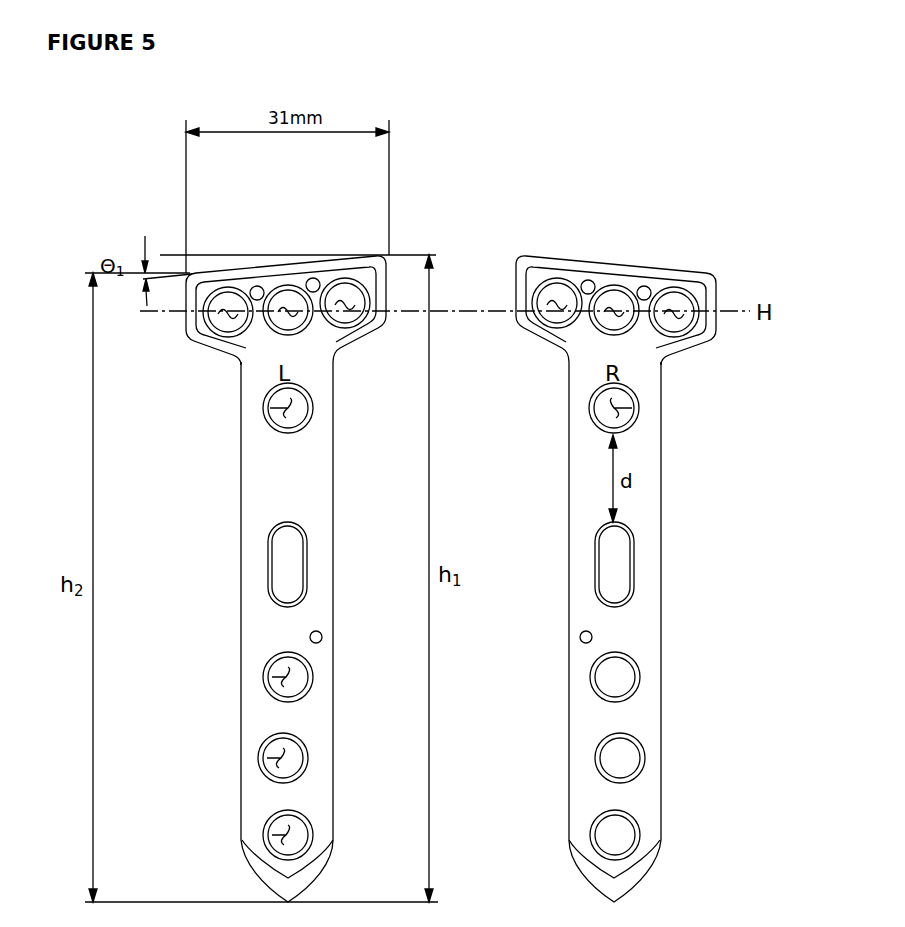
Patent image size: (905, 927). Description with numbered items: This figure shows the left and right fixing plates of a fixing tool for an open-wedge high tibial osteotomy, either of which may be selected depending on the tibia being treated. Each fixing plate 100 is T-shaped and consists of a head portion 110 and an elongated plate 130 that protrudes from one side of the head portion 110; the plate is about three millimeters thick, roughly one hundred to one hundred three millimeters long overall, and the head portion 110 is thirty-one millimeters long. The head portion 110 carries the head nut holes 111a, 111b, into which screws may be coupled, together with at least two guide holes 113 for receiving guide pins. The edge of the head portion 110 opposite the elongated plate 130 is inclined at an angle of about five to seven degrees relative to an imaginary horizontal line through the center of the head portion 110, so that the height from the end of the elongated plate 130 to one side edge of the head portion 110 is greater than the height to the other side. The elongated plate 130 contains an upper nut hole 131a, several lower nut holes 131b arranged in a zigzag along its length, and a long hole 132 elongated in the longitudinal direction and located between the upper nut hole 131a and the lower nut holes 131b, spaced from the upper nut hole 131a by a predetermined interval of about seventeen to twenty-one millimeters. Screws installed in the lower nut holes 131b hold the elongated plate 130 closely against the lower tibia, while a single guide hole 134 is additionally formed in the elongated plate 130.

The fixing plate 100 is at (150, 110).
The head portion 110 is at (250, 343).
The head nut hole 111a is at (288, 287).
The head nut hole 111b is at (228, 288).
The guide hole 113 is at (258, 286).
The elongated plate 130 is at (258, 630).
The upper nut hole 131a is at (264, 410).
The lower nut hole 131b is at (272, 825).
The long hole 132 is at (270, 563).
The guide hole 134 is at (322, 638).